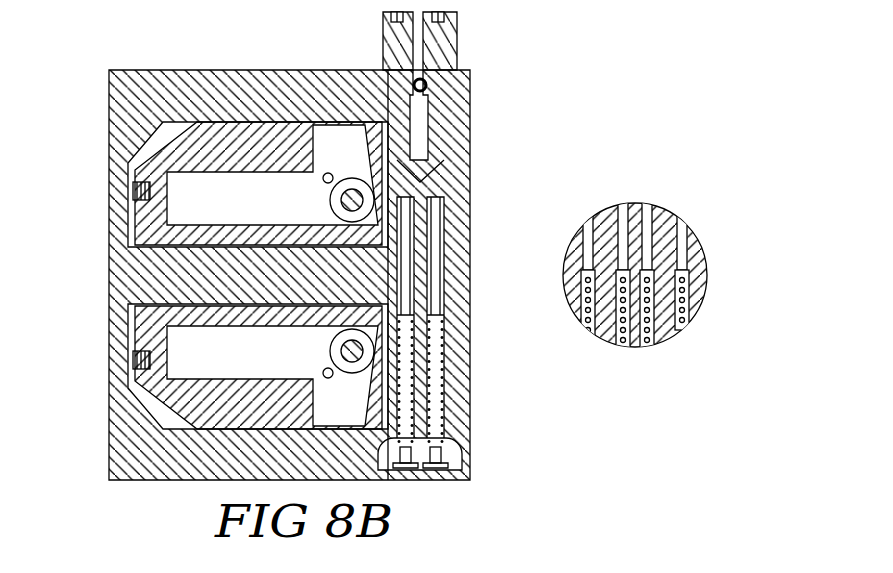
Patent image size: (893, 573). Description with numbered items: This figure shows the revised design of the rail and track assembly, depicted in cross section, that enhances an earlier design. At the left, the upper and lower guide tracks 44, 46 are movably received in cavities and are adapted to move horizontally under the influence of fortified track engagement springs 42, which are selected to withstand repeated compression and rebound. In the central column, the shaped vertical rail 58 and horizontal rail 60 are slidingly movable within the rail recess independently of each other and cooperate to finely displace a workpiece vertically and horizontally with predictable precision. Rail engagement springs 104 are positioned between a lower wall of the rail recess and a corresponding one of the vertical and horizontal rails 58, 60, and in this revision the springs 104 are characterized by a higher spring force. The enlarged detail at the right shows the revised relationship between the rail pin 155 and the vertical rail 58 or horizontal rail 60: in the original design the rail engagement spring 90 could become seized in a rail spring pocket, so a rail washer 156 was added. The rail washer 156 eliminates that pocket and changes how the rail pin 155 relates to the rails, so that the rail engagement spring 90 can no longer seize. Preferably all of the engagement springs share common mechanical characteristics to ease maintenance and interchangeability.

The track engagement spring 42 is at (120, 180).
The upper guide track 44 is at (166, 140).
The lower guide track 46 is at (165, 412).
The vertical rail 58 is at (418, 172).
The horizontal rail 60 is at (443, 178).
The rail engagement spring 90 is at (692, 312).
The rail engagement spring 104 is at (415, 447).
The rail pin 155 is at (583, 224).
The rail washer 156 is at (573, 272).